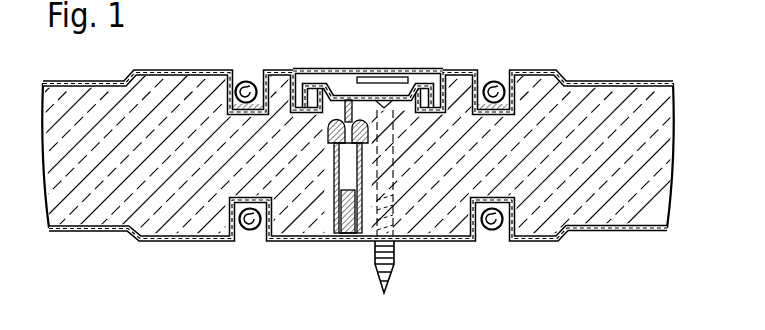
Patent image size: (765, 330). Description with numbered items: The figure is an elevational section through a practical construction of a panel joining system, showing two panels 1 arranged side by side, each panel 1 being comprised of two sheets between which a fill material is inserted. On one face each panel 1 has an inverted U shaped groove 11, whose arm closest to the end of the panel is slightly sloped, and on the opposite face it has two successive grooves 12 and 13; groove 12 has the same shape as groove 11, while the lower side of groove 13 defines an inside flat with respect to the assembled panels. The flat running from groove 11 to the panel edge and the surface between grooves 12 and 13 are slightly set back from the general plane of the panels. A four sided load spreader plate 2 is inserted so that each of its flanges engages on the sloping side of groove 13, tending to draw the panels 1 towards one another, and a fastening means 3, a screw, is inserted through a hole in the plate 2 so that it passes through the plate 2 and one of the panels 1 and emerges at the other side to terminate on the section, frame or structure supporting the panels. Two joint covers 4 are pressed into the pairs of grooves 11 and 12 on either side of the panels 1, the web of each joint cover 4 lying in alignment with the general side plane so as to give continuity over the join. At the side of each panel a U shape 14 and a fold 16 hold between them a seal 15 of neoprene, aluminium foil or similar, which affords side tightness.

The panel 1 is at (196, 96).
The load spreader plate 2 is at (334, 96).
The means of fastening 3 is at (395, 262).
The joint cover 4 is at (452, 72).
The inverted U shaped groove 11 is at (245, 229).
The groove 12 is at (245, 82).
The groove 13 is at (312, 86).
The U shape 14 is at (372, 142).
The seal 15 is at (335, 190).
The fold 16 is at (340, 234).